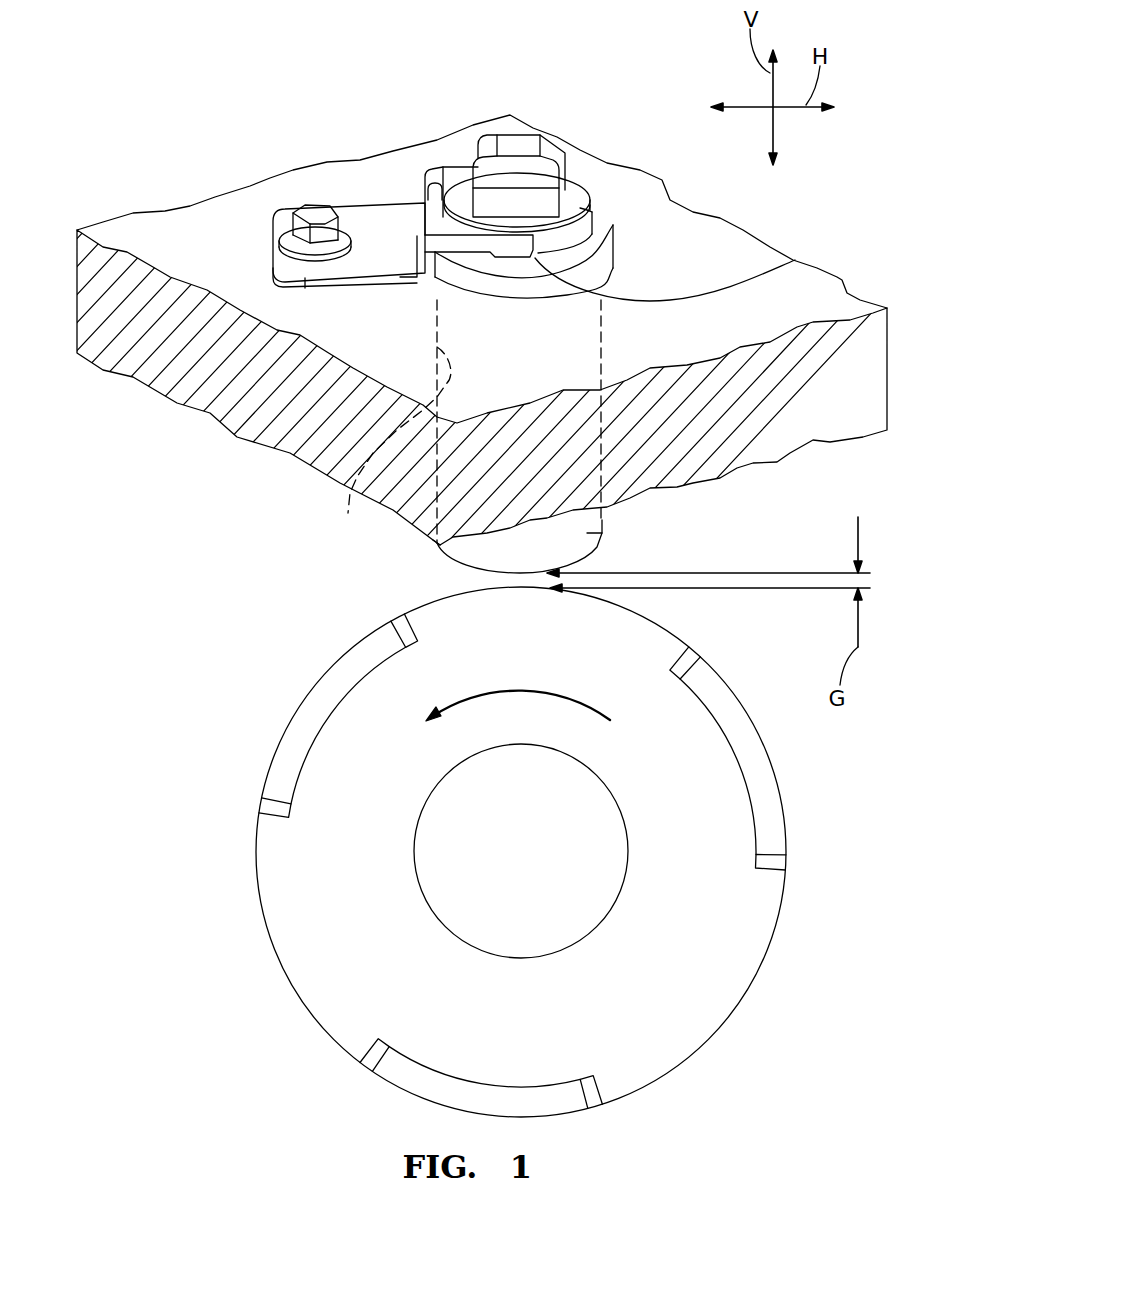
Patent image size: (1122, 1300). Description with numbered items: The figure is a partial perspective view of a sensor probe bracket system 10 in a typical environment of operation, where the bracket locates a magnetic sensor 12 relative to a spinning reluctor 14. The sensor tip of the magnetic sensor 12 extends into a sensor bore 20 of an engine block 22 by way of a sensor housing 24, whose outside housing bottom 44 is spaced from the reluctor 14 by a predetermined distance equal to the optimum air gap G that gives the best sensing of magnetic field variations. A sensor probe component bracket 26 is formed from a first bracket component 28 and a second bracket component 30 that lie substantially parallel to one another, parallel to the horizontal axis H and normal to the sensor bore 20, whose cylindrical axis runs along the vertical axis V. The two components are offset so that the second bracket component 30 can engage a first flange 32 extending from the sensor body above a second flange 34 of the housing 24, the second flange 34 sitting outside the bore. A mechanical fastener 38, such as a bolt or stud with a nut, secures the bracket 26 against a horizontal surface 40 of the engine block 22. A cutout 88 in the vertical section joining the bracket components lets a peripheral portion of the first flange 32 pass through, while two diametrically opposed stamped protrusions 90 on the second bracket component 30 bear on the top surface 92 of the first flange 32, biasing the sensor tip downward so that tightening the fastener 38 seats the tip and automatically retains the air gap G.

The sensor probe bracket system 10 is at (280, 118).
The magnetic sensor 12 is at (550, 148).
The reluctor 14 is at (283, 727).
The sensor bore 20 is at (392, 446).
The engine block 22 is at (760, 253).
The sensor housing 24 is at (602, 533).
The sensor probe component bracket 26 is at (370, 215).
The first bracket component 28 is at (285, 253).
The second bracket component 30 is at (460, 170).
The first flange 32 is at (612, 240).
The second flange 34 is at (605, 295).
The mechanical fastener 38 is at (315, 213).
The horizontal surface 40 is at (143, 237).
The outside housing bottom 44 is at (443, 547).
The cutout 88 is at (430, 197).
The protrusions 90 is at (795, 260).
The top surface 92 is at (600, 210).